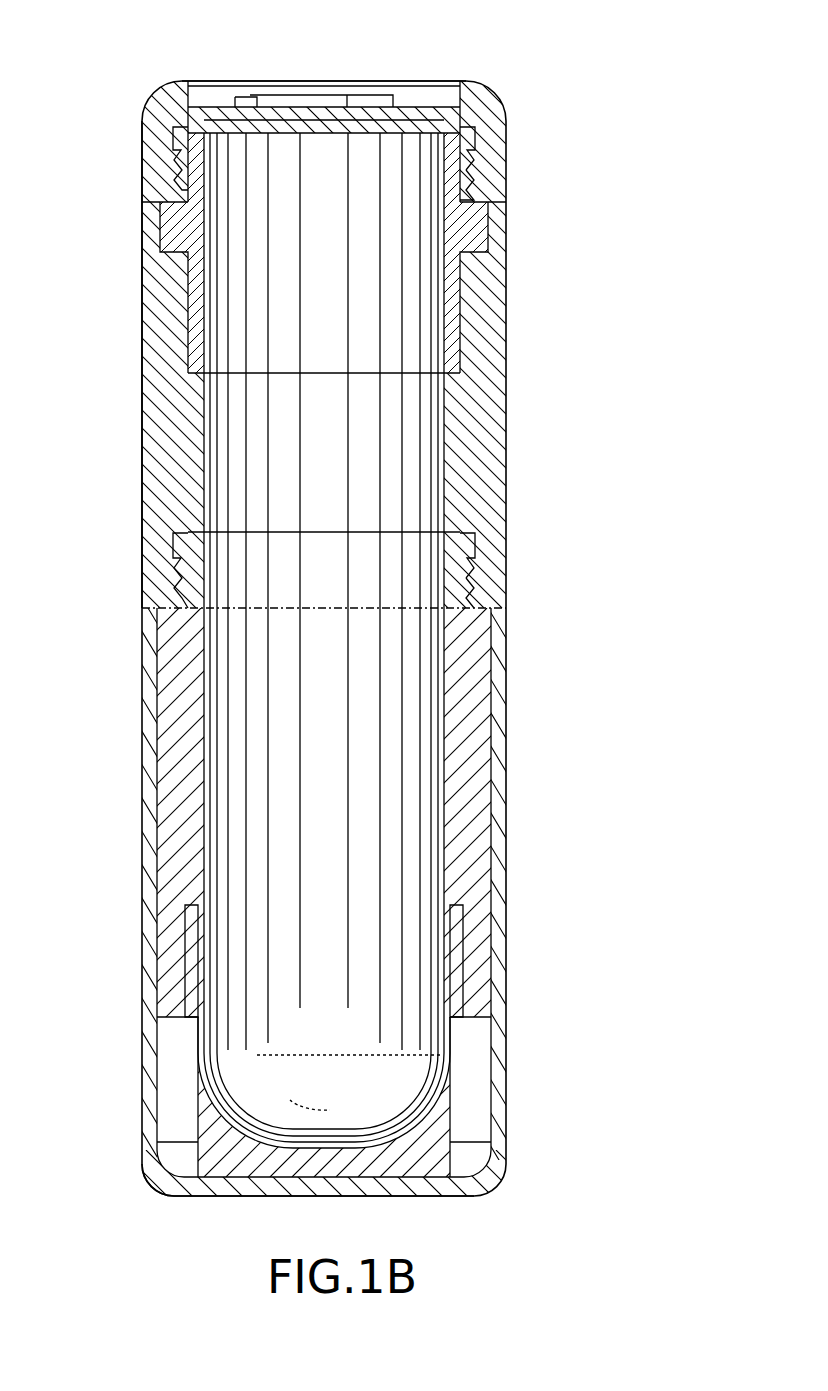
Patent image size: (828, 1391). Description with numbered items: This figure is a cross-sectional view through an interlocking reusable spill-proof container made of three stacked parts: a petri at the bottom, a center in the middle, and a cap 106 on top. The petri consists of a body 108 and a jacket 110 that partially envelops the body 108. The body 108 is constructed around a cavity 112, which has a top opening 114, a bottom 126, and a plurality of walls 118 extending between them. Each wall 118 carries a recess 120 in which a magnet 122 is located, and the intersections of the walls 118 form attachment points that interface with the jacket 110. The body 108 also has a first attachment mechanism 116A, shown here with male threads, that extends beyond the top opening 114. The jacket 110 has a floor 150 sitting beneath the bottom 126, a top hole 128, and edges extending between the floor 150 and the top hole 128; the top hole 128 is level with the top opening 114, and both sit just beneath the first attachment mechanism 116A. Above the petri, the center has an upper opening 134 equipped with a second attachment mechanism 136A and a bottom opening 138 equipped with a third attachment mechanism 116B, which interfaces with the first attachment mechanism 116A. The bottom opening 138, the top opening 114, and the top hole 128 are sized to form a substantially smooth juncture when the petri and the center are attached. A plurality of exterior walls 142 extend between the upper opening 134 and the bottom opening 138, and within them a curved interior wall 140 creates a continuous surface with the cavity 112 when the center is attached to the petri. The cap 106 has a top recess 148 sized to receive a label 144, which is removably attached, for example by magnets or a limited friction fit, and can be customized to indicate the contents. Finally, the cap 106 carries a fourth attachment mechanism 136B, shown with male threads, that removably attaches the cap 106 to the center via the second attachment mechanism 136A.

The cap 106 is at (512, 130).
The body 108 is at (157, 1093).
The jacket 110 is at (152, 1180).
The cavity 112 is at (390, 1085).
The top opening 114 is at (260, 537).
The first attachment mechanism 116A is at (467, 555).
The third attachment mechanism 116B is at (470, 580).
The walls 118 is at (441, 722).
The recess 120 is at (467, 923).
The magnet 122 is at (187, 940).
The bottom 126 is at (387, 1177).
The top hole 128 is at (240, 610).
The upper opening 134 is at (237, 132).
The second attachment mechanism 136A is at (467, 177).
The fourth attachment mechanism 136B is at (468, 190).
The bottom opening 138 is at (253, 610).
The curved interior wall 140 is at (203, 318).
The exterior walls 142 is at (142, 373).
The label 144 is at (426, 79).
The top recess 148 is at (457, 102).
The floor 150 is at (197, 1196).